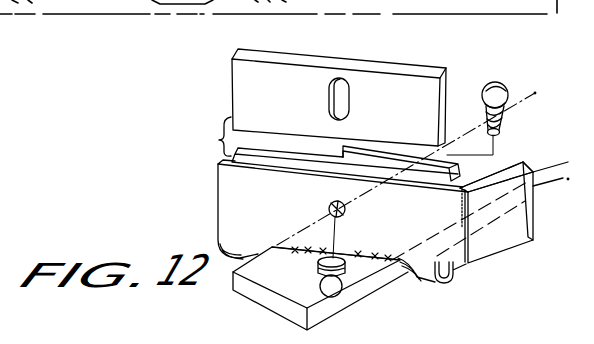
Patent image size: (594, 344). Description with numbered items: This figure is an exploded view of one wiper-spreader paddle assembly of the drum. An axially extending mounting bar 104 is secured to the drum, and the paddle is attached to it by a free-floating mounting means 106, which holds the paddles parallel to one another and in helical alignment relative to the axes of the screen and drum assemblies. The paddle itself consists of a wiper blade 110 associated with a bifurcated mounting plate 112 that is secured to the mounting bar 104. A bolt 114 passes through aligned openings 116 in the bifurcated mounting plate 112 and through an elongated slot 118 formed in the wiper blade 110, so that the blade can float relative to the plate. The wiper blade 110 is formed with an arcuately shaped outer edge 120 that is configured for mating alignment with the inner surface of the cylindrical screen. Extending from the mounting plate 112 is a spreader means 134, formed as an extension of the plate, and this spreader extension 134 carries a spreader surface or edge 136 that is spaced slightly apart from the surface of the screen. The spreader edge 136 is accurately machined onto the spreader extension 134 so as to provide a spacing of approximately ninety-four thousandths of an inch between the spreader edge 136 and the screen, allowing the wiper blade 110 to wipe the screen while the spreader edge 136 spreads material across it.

The mounting bar 104 is at (272, 312).
The free-floating mounting means 106 is at (218, 180).
The wiper blade 110 is at (232, 105).
The mounting plate 112 is at (219, 205).
The bolt 114 is at (508, 85).
The opening 116 is at (329, 207).
The elongated slot 118 is at (328, 90).
The arcuately shaped outer edge 120 is at (404, 66).
The spreader means 134 is at (503, 233).
The spreader edge 136 is at (508, 165).